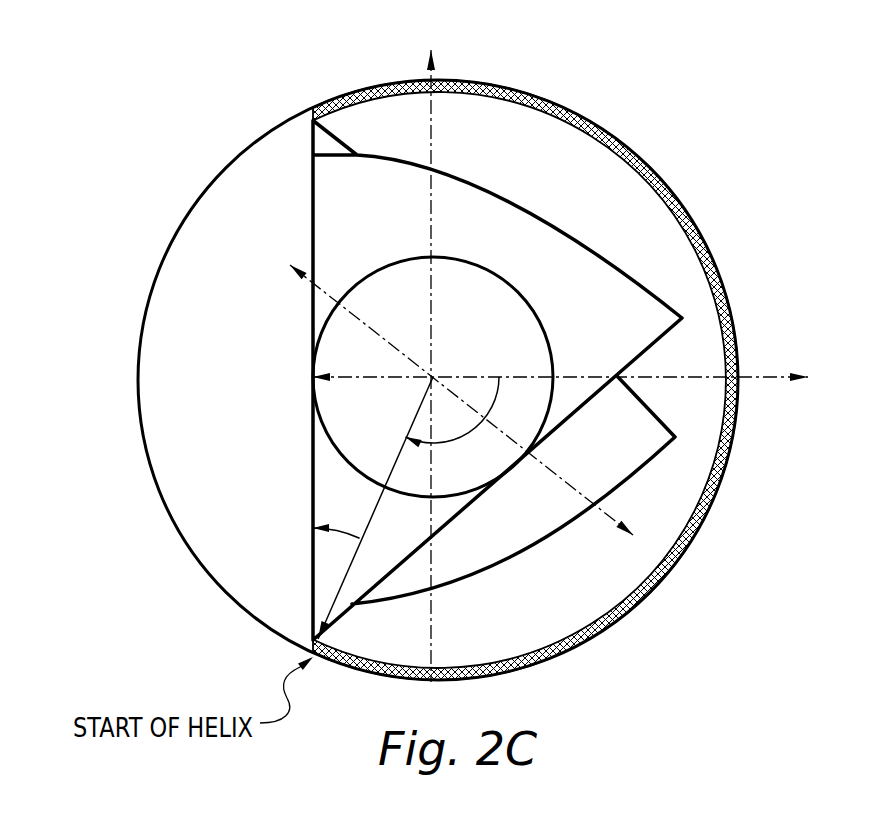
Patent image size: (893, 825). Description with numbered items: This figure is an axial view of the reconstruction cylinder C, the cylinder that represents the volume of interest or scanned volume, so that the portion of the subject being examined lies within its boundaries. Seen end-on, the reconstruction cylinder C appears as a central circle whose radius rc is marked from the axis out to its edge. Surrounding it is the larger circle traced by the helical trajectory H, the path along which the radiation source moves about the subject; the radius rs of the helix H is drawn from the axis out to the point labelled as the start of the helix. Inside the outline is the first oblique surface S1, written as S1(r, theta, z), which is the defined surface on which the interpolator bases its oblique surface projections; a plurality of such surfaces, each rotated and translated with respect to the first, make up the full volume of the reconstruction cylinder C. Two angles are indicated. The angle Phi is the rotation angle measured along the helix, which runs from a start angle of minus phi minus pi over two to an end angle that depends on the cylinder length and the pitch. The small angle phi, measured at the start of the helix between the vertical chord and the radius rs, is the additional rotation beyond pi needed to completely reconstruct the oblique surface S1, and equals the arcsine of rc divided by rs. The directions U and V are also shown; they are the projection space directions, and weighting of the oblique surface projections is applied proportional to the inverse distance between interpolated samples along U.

The helical trajectory H is at (625, 144).
The first oblique surface S1 is at (340, 197).
The reconstruction cylinder C is at (517, 294).
The projection space direction V is at (430, 347).
The projection space direction U is at (447, 392).
The radius of the reconstruction cylinder rc is at (347, 362).
The radius of the helix rs is at (375, 508).
The helix rotation angle Phi is at (453, 431).
The additional rotation angle phi is at (336, 519).